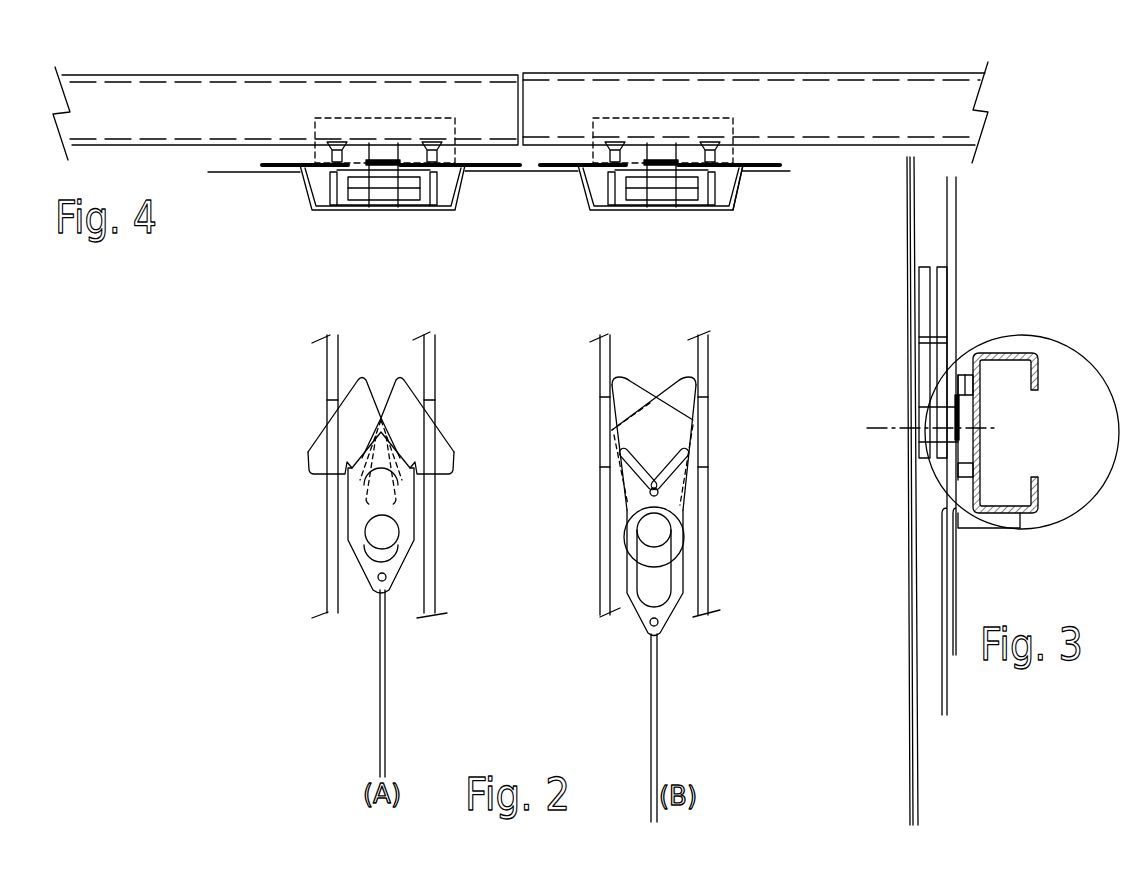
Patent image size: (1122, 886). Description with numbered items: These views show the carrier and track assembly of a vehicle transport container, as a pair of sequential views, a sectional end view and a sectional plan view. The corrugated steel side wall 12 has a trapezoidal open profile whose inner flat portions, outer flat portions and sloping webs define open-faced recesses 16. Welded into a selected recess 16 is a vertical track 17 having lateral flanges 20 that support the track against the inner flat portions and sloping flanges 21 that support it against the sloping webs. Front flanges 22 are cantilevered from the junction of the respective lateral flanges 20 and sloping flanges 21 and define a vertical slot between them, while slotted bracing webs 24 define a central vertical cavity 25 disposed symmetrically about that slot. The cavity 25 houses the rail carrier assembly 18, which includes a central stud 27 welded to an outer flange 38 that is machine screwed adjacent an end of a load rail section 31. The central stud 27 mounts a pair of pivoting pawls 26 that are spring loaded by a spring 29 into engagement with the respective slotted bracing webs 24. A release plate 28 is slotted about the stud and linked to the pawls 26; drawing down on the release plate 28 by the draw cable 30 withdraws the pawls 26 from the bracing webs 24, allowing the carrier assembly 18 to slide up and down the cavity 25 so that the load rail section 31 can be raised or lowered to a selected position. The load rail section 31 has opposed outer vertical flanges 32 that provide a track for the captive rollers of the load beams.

In FIG. 4, the corrugated steel side wall 12 is at (520, 170).
In FIG. 4, the open-faced recess 16 is at (443, 190).
In FIG. 4, the vertical track 17 is at (722, 172).
In FIG. 2, the rail carrier assembly 18 is at (397, 578).
In FIG. 3, the rail carrier assembly 18 is at (923, 363).
In FIG. 4, the lateral flange 20 is at (765, 163).
In FIG. 4, the sloping flange 21 is at (735, 194).
In FIG. 4, the front flange 22 is at (590, 166).
In FIG. 4, the slotted bracing web 24 is at (308, 202).
In FIG. 2, the slotted bracing web 24 is at (335, 484).
In FIG. 2, the central vertical cavity 25 is at (380, 373).
In FIG. 2, the pivoting pawl 26 is at (365, 417).
In FIG. 4, the central stud 27 is at (385, 178).
In FIG. 2, the central stud 27 is at (655, 530).
In FIG. 2, the release plate 28 is at (380, 505).
In FIG. 2, the spring 29 is at (383, 531).
In FIG. 3, the spring 29 is at (917, 367).
In FIG. 2, the draw cable 30 is at (380, 652).
In FIG. 4, the load rail section 31 is at (168, 107).
In FIG. 3, the load rail section 31 is at (1001, 352).
In FIG. 3, the outer vertical flange 32 is at (1040, 486).
In FIG. 3, the outer flange 38 is at (962, 380).